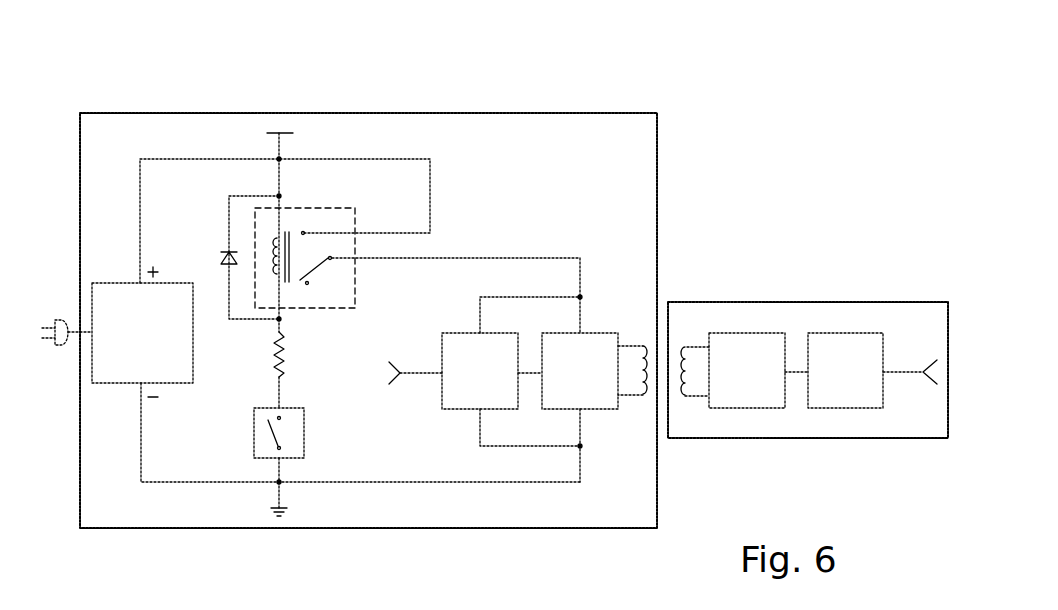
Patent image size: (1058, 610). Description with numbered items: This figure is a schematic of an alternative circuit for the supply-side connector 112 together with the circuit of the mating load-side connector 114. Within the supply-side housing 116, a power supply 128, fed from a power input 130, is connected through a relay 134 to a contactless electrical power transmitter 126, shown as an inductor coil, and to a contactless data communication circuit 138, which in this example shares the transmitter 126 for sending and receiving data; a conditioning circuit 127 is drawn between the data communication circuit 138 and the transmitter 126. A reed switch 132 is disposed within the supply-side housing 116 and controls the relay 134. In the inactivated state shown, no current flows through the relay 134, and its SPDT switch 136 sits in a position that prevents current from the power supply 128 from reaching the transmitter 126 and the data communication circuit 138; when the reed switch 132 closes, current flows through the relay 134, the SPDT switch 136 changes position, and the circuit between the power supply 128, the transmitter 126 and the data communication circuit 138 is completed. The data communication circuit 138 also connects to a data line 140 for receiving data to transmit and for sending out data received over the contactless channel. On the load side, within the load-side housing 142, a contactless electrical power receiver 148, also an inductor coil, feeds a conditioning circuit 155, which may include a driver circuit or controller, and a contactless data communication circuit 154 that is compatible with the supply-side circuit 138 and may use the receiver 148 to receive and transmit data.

The supply-side connector 112 is at (394, 80).
The load-side connector 114 is at (851, 226).
The supply-side housing 116 is at (213, 113).
The contactless electrical power transmitter 126 is at (627, 345).
The condition circuit 127 is at (590, 333).
The power supply 128 is at (118, 283).
The plug 130 is at (92, 328).
The reed switch 132 is at (297, 408).
The relay 134 is at (327, 178).
The SPDT switch 136 is at (318, 265).
The contactless data communication circuit 138 is at (450, 333).
The data line 140 is at (418, 368).
The housing 142 is at (877, 438).
The contactless electrical power receiver 148 is at (697, 347).
The contactless data communication circuit 154 is at (845, 333).
The conditioning circuit 155 is at (769, 333).